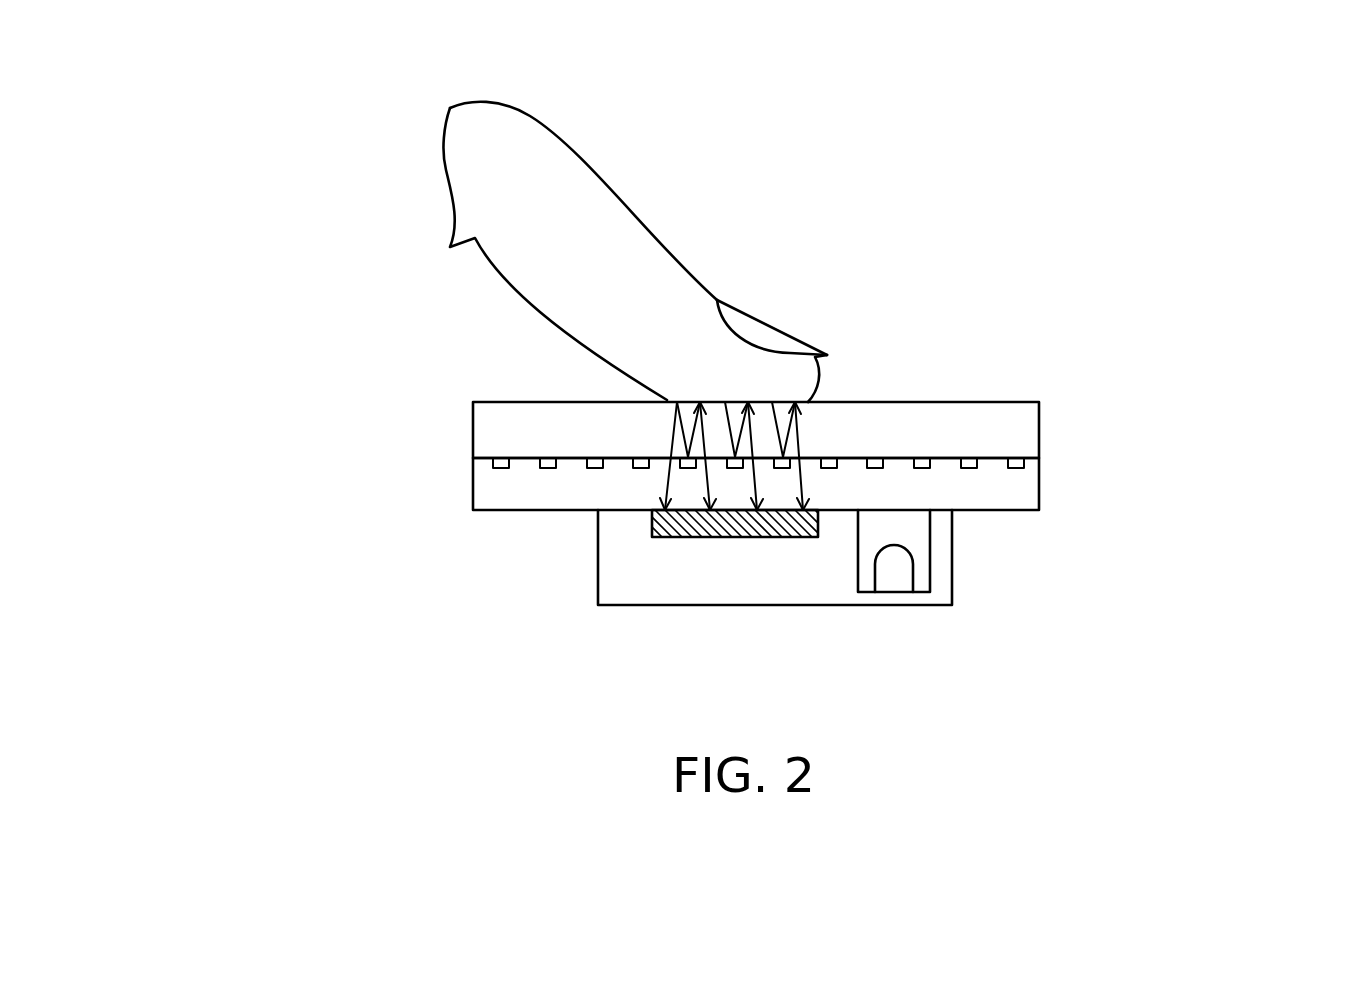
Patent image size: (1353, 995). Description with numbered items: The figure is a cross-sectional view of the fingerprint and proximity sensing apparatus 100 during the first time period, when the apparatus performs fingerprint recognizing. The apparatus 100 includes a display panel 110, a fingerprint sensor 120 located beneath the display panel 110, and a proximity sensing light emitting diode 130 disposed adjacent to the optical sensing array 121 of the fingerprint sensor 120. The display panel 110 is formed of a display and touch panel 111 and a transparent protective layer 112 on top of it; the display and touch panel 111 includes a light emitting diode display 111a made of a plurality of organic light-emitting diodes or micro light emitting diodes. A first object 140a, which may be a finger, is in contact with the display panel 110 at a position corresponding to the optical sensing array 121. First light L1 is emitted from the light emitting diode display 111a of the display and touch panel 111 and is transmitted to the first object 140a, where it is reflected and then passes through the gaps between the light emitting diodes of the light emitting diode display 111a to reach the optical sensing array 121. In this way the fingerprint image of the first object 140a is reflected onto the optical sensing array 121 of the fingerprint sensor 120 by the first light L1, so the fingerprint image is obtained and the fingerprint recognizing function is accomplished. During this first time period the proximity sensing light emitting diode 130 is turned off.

The fingerprint and proximity sensing apparatus 100 is at (1305, 716).
The display panel 110 is at (183, 28).
The display and touch panel 111 is at (1032, 500).
The light emitting diode display 111a is at (1015, 462).
The transparent protective layer 112 is at (1032, 432).
The fingerprint sensor 120 is at (617, 580).
The optical sensing array 121 is at (662, 523).
The proximity sensing light emitting diode 130 is at (902, 578).
The first object 140a is at (462, 178).
The first light L1 is at (800, 447).